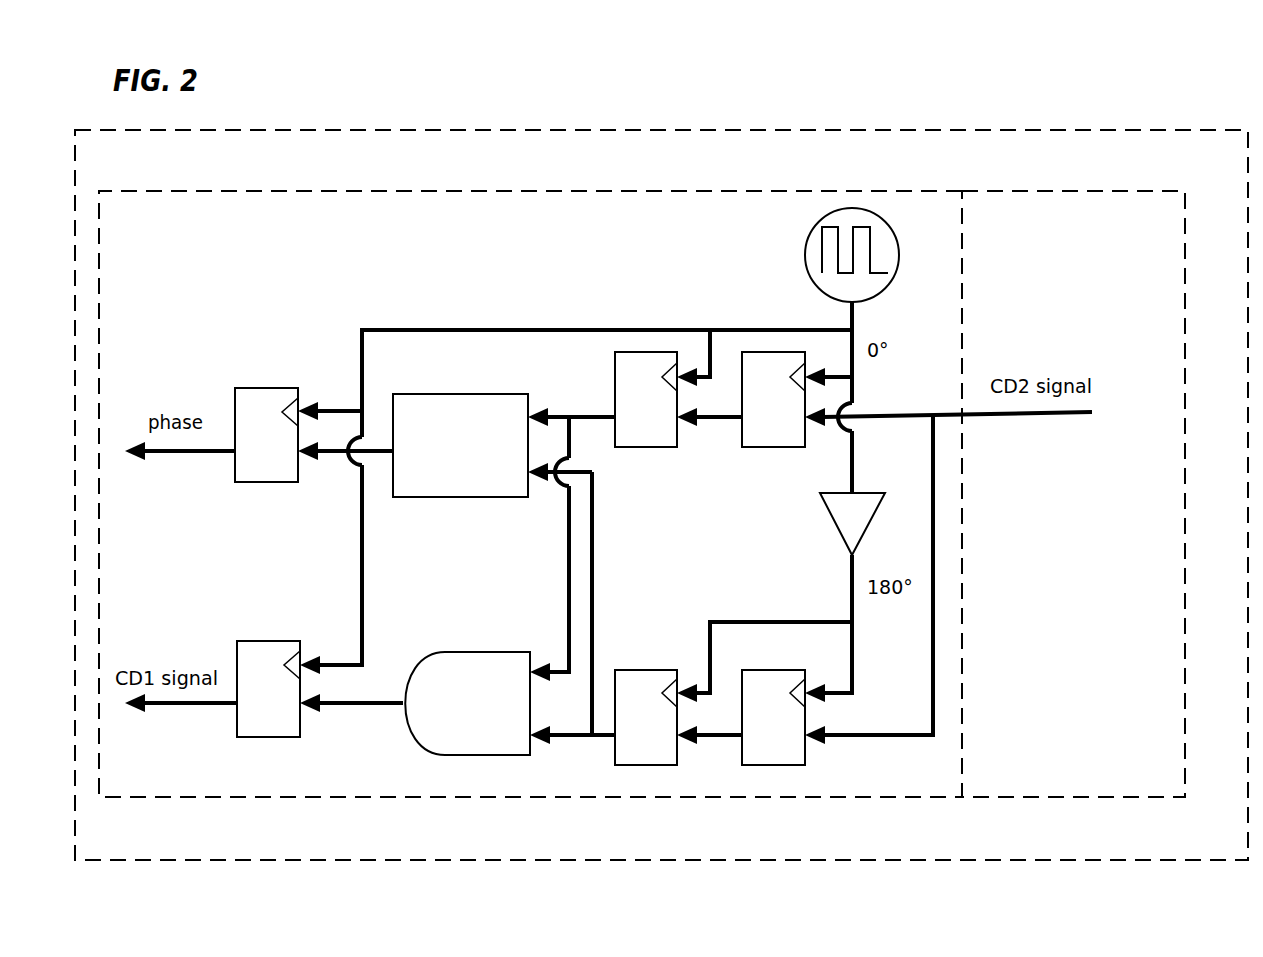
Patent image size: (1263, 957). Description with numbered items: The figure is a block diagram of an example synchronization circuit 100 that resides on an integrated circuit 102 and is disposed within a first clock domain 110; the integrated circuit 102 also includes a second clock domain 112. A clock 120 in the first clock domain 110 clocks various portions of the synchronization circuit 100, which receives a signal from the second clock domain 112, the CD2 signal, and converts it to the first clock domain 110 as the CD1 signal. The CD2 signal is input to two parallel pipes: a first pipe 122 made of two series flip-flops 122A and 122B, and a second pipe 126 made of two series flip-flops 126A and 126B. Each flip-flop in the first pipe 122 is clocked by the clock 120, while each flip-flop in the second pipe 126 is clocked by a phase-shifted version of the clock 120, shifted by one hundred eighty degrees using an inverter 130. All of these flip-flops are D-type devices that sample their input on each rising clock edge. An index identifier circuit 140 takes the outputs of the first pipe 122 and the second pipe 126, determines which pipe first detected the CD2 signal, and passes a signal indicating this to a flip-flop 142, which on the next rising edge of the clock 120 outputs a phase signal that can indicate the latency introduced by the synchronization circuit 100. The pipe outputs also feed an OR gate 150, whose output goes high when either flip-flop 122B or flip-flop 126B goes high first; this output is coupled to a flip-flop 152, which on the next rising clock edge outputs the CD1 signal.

The synchronization circuit 100 is at (280, 256).
The integrated circuit 102 is at (1208, 130).
The first clock domain 110 is at (833, 192).
The second clock domain 112 is at (1118, 192).
The clock 120 is at (804, 254).
The first pipe 122 is at (729, 448).
The flip-flop 122A is at (793, 415).
The flip-flop 122B is at (648, 448).
The second pipe 126 is at (729, 678).
The flip-flop 126A is at (775, 766).
The flip-flop 126B is at (648, 766).
The inverter 130 is at (833, 521).
The index identifier circuit 140 is at (458, 498).
The flip-flop 142 is at (268, 483).
The OR gate 150 is at (475, 756).
The flip-flop 152 is at (268, 738).